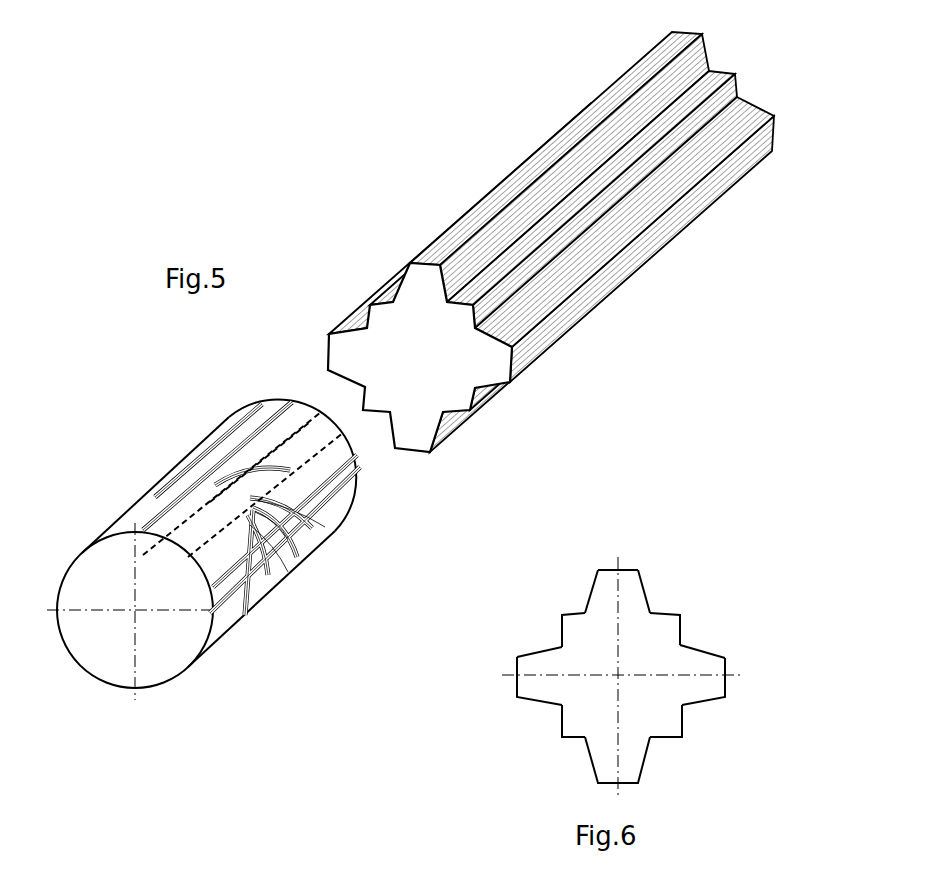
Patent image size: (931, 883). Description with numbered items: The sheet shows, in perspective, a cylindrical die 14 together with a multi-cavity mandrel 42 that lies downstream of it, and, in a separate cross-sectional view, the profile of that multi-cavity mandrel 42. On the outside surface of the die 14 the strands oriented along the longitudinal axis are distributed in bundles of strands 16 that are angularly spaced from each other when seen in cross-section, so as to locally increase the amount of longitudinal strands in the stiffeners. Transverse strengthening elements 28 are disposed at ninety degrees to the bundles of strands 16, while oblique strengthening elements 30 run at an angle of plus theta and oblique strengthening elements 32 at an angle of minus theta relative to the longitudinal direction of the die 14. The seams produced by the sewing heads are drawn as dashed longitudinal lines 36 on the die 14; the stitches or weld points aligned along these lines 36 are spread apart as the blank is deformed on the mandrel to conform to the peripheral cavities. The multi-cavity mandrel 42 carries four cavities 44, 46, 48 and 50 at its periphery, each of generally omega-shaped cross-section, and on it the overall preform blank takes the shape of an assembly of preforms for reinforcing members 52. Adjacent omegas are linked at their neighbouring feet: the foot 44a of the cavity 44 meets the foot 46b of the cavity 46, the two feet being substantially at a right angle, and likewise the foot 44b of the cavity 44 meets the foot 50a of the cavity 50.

In FIG. 5, the die 14 is at (50, 658).
In FIG. 5, the bundles of strands 16 is at (238, 422).
In FIG. 5, the transverse strengthening elements 28 is at (288, 540).
In FIG. 5, the oblique strengthening elements 30 is at (325, 527).
In FIG. 5, the oblique strengthening elements 32 is at (288, 572).
In FIG. 5, the longitudinal lines 36 is at (583, 108).
In FIG. 5, the multi-cavity mandrel 42 is at (430, 376).
In FIG. 6, the multi-cavity mandrel 42 is at (628, 640).
In FIG. 6, the cavity 44 is at (609, 578).
In FIG. 6, the foot 44a is at (570, 615).
In FIG. 6, the foot 44b is at (668, 613).
In FIG. 6, the cavity 46 is at (501, 700).
In FIG. 6, the foot 46b is at (557, 633).
In FIG. 6, the cavity 48 is at (662, 763).
In FIG. 6, the cavity 50 is at (748, 643).
In FIG. 6, the foot 50a is at (697, 650).
In FIG. 5, the preforms for reinforcing members 52 is at (447, 205).